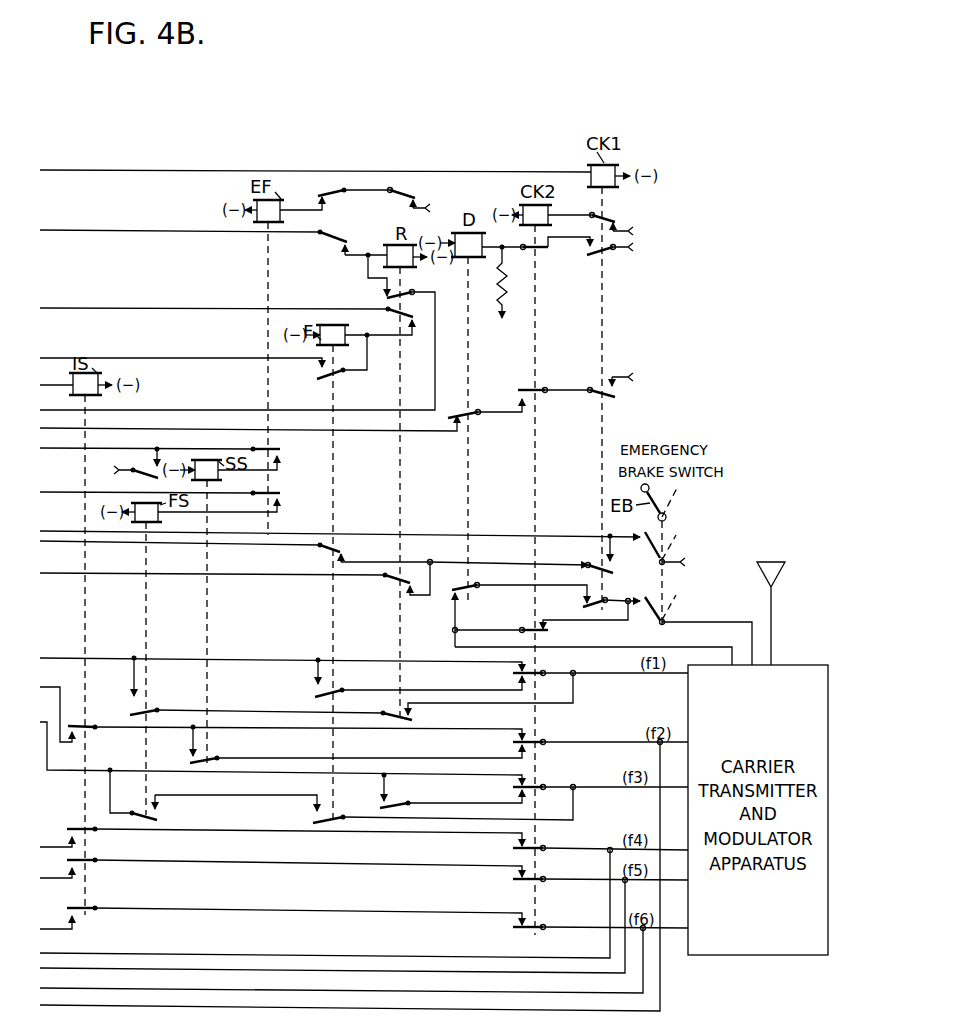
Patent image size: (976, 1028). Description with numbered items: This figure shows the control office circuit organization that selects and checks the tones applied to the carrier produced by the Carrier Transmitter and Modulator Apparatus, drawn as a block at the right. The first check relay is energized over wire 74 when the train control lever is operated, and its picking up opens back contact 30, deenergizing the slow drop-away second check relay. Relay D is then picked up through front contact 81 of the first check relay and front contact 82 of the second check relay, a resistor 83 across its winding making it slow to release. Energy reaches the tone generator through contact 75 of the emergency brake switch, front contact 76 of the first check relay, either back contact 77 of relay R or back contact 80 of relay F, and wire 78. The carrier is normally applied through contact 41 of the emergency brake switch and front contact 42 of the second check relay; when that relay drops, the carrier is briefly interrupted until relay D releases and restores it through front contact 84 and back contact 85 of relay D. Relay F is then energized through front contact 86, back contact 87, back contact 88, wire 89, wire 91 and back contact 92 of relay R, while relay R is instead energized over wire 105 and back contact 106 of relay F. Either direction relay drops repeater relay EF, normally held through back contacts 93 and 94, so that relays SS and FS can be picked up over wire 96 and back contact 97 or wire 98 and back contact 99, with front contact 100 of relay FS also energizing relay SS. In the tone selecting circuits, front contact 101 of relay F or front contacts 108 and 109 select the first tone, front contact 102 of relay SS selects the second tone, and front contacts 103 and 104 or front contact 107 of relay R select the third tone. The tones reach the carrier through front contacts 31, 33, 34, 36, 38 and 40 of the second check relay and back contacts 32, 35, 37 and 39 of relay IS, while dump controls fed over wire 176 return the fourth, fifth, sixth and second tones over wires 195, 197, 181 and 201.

The wire 74 is at (48, 170).
The wire 105 is at (50, 230).
The wire 91 is at (48, 308).
The wire 89 is at (52, 416).
The wire 96 is at (75, 448).
The wire 98 is at (75, 492).
The wire 176 is at (124, 532).
The wire 78 is at (52, 560).
The wire 195 is at (120, 953).
The wire 197 is at (178, 968).
The wire 181 is at (122, 988).
The wire 201 is at (118, 1005).
The back contact of relay F 94 is at (336, 191).
The back contact of relay R 93 is at (392, 196).
The back contact of relay F 106 is at (336, 237).
The back contact of relay R 92 is at (396, 314).
The back contact of relay EF 97 is at (280, 452).
The back contact of relay EF 99 is at (280, 496).
The front contact of relay FS 100 is at (152, 470).
The back contact of relay CK1 30 is at (612, 220).
The front contact of relay CK2 82 is at (538, 252).
The front contact of relay CK1 81 is at (605, 256).
The resistor 83 is at (504, 284).
The front contact of relay CK1 86 is at (604, 389).
The back contact of relay CK2 87 is at (534, 395).
The back contact of relay D 88 is at (462, 419).
The back contact of relay F 80 is at (318, 555).
The front contact of relay CK1 76 is at (594, 564).
The contact of emergency brake switch EB 75 is at (657, 556).
The back contact of relay R 77 is at (392, 586).
The back contact of relay D 85 is at (468, 591).
The front contact of relay CK1 84 is at (604, 605).
The contact of emergency brake switch EB 41 is at (658, 624).
The front contact of relay CK2 42 is at (528, 633).
The front contact of relay FS 109 is at (145, 712).
The front contact of relay F 101 is at (334, 694).
The front contact of relay R 108 is at (396, 713).
The back contact of relay IS 32 is at (85, 730).
The front contact of relay SS 102 is at (206, 762).
The front contact of relay CK2 31 is at (535, 678).
The front contact of relay CK2 33 is at (537, 746).
The front contact of relay CK2 34 is at (535, 791).
The front contact of relay FS 103 is at (147, 813).
The front contact of relay F 104 is at (326, 818).
The front contact of relay R 107 is at (395, 806).
The back contact of relay IS 35 is at (80, 828).
The back contact of relay IS 37 is at (85, 863).
The back contact of relay IS 39 is at (95, 907).
The front contact of relay CK2 36 is at (538, 852).
The front contact of relay CK2 38 is at (537, 883).
The front contact of relay CK2 40 is at (537, 931).